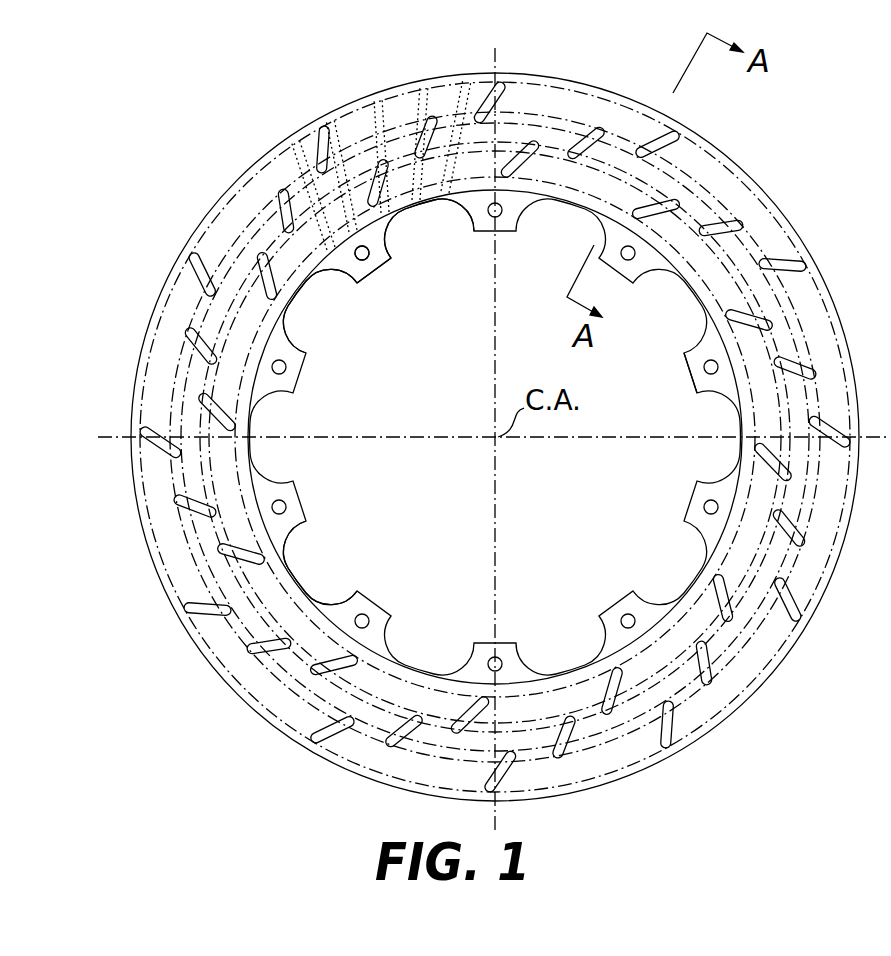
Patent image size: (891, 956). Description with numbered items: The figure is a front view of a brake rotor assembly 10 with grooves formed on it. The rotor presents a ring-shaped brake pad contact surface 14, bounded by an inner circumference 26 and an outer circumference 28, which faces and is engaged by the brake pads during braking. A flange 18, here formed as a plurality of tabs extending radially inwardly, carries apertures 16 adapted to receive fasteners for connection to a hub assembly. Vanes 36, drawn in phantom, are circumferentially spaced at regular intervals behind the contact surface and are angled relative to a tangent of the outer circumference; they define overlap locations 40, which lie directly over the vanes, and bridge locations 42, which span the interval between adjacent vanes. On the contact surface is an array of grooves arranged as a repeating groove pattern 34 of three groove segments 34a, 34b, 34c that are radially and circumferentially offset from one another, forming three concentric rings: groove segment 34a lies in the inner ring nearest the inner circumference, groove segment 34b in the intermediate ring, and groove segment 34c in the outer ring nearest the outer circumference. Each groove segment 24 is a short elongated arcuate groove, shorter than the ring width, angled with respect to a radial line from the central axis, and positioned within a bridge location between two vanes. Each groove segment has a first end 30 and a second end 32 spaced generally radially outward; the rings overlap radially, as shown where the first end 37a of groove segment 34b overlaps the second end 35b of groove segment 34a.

The brake rotor assembly 10 is at (783, 167).
The brake pad contact surface 14 is at (806, 290).
The apertures 16 is at (692, 370).
The flange 18 is at (657, 272).
The groove segment 24 is at (270, 480).
The inner circumference 26 is at (475, 192).
The outer circumference 28 is at (540, 72).
The first end 30 is at (285, 555).
The second end 32 is at (213, 583).
The groove pattern 34 is at (368, 348).
The groove segment 34a is at (290, 303).
The groove segment 34b is at (310, 275).
The groove segment 34c is at (399, 269).
The second end 35b is at (240, 253).
The vanes 36 is at (227, 227).
The first end 37a is at (272, 215).
The overlap locations 40 is at (380, 105).
The bridge locations 42 is at (405, 110).